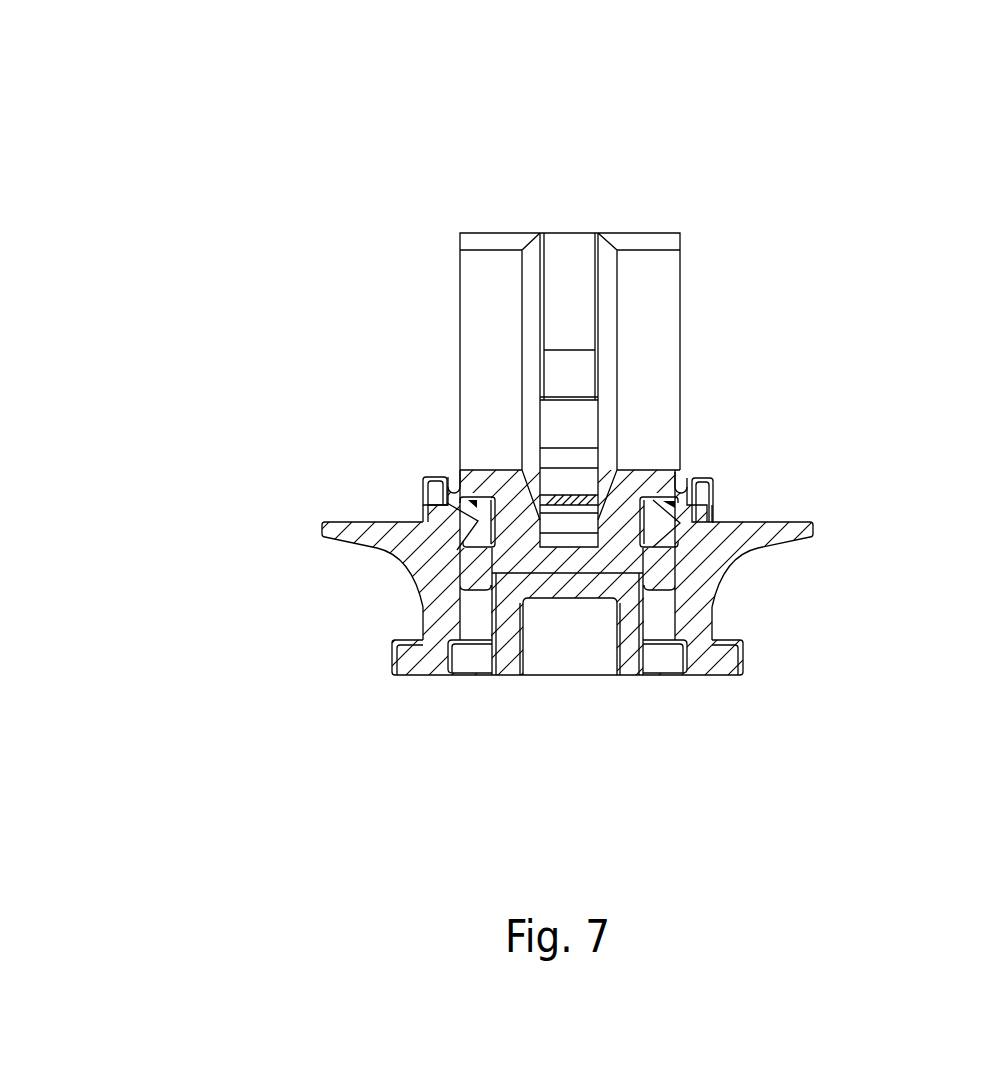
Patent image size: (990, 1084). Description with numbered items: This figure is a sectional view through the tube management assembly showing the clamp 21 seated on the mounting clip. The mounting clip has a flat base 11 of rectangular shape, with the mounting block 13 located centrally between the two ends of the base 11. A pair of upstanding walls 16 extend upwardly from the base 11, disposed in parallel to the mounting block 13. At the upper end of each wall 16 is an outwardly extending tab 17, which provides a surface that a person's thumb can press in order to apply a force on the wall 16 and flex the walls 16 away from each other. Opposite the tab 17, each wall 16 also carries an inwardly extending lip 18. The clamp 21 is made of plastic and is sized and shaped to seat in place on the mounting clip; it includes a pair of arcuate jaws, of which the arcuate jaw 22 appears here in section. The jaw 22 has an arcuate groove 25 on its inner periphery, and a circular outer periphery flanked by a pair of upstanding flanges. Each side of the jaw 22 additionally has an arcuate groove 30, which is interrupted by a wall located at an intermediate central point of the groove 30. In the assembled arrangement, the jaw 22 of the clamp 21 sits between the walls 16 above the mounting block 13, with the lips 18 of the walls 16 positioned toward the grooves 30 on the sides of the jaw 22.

The base 11 is at (723, 662).
The mounting block 13 is at (557, 623).
The upstanding walls 16 is at (683, 622).
The tab 17 is at (747, 535).
The lip 18 is at (681, 503).
The clamp 21 is at (486, 487).
The arcuate jaw 22 is at (652, 305).
The arcuate groove 25 is at (568, 270).
The arcuate groove 30 is at (560, 531).